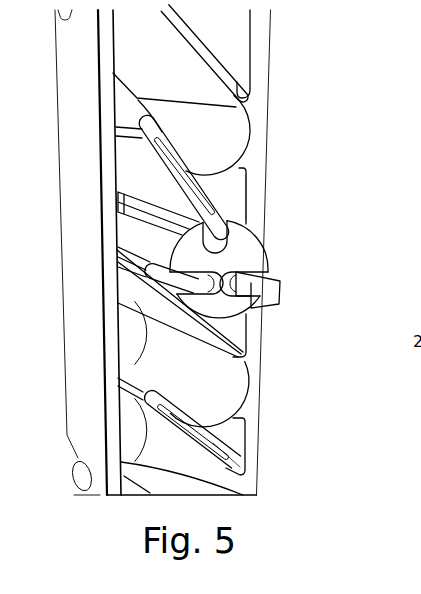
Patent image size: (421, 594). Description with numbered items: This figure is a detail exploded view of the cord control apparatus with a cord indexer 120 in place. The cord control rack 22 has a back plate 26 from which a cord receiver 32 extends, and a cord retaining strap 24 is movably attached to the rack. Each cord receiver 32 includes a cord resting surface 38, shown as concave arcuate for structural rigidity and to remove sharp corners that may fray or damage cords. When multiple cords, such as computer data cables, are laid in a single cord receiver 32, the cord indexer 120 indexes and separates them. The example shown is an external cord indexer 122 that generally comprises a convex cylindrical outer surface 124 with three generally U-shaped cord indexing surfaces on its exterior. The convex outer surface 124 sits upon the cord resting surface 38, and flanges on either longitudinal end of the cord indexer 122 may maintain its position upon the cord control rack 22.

The cord indexer 120 is at (287, 80).
The external cord indexer 122 is at (295, 182).
The convex cylindrical outer surface 124 is at (137, 232).
The cord retaining strap 24 is at (82, 378).
The back plate 26 is at (263, 344).
The cord control rack 22 is at (250, 410).
The cord receiver 32 is at (253, 278).
The cord resting surface 38 is at (244, 289).